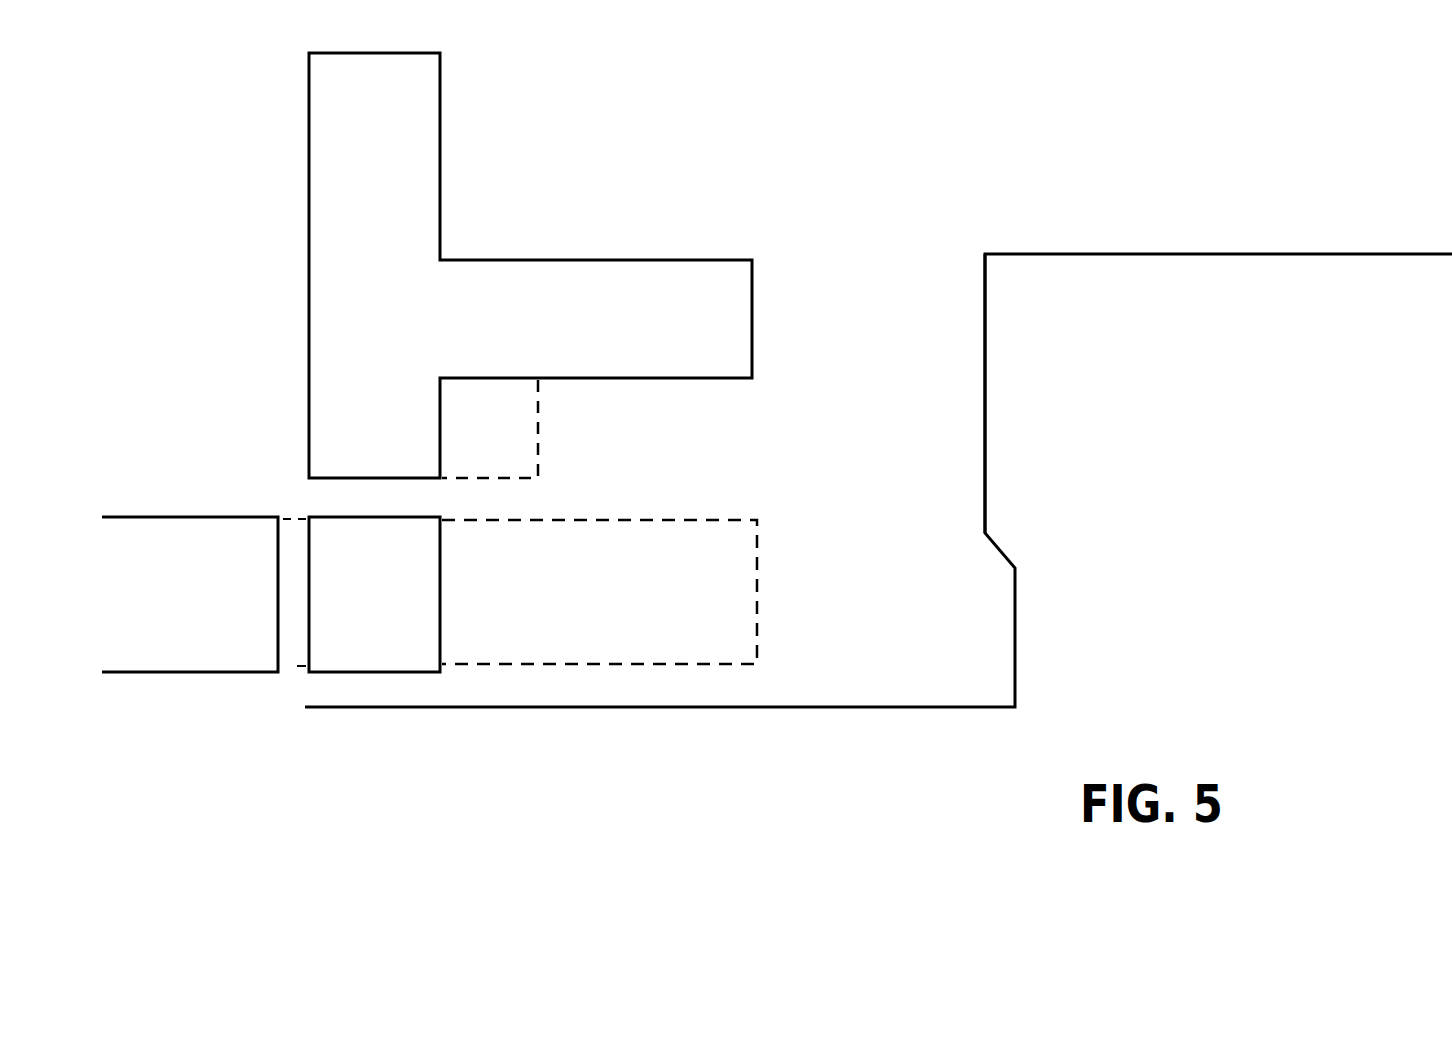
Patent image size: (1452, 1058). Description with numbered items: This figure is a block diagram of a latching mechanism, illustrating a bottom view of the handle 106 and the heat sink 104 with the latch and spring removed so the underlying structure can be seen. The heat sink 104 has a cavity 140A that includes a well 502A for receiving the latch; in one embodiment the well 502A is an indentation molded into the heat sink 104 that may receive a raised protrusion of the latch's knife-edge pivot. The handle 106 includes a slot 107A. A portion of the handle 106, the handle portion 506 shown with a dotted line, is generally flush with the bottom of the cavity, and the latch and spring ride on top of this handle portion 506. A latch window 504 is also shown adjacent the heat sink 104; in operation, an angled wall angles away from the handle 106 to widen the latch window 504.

The heat sink 104 is at (1246, 508).
The handle 106 is at (302, 510).
The slot 107A is at (288, 668).
The cavity 140A is at (965, 427).
The well 502A is at (517, 445).
The latch window 504 is at (926, 271).
The handle portion 506 is at (730, 587).